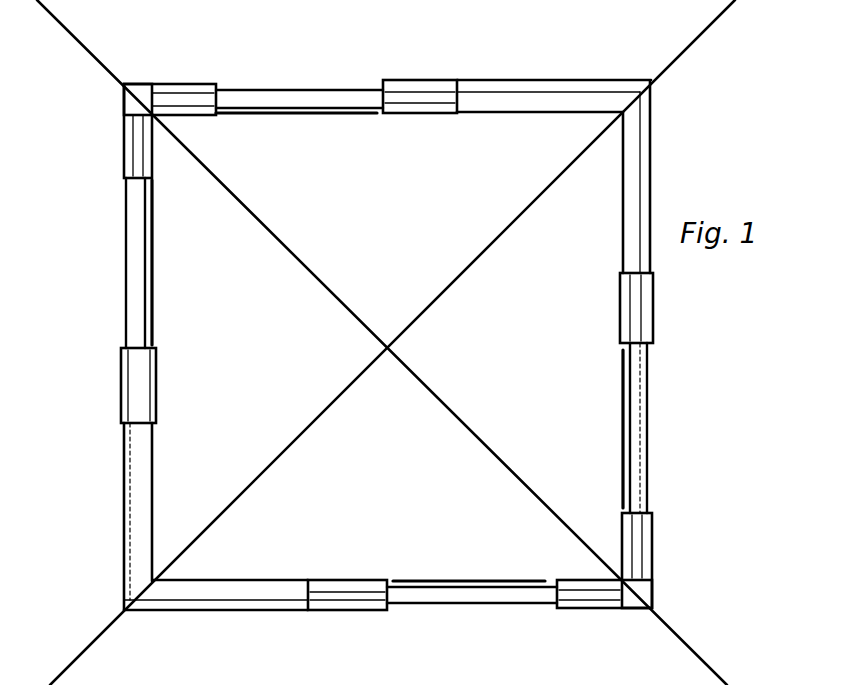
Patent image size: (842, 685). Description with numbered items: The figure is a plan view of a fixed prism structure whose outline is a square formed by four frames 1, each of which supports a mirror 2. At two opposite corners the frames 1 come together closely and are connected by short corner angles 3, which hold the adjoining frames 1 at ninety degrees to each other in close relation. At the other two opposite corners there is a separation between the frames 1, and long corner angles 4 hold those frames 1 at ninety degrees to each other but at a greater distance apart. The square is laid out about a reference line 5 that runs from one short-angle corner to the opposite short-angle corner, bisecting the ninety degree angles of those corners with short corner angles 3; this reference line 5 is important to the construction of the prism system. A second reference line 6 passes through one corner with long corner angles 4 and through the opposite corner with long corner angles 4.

The frame 1 is at (325, 98).
The mirror 2 is at (272, 115).
The short corner angle 3 is at (135, 135).
The long corner angle 4 is at (135, 540).
The reference line 5 is at (457, 417).
The second reference line 6 is at (278, 455).